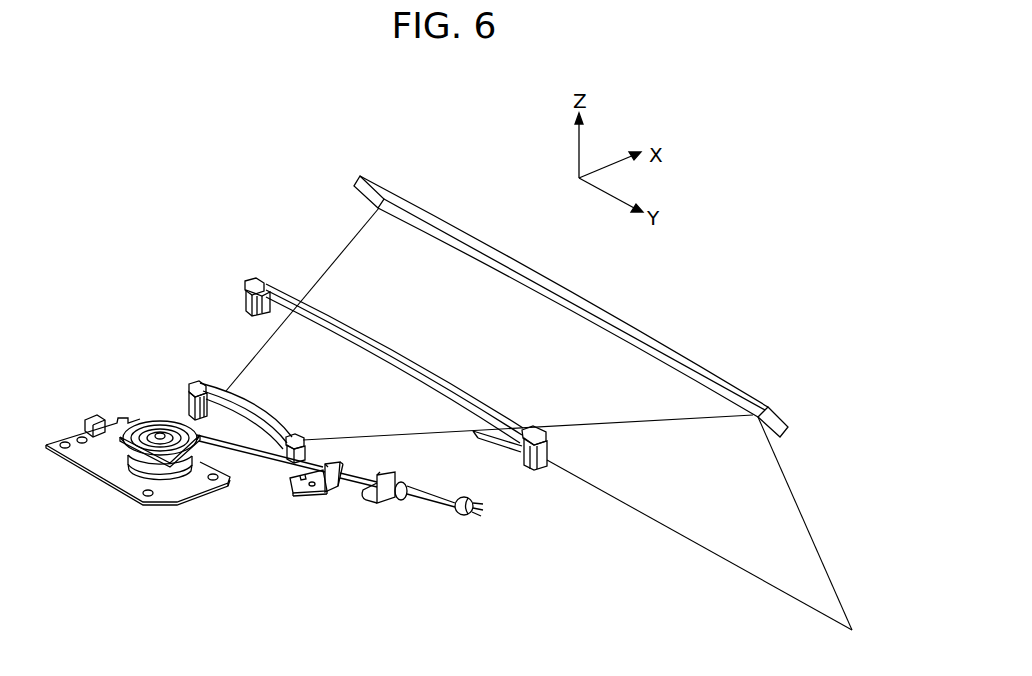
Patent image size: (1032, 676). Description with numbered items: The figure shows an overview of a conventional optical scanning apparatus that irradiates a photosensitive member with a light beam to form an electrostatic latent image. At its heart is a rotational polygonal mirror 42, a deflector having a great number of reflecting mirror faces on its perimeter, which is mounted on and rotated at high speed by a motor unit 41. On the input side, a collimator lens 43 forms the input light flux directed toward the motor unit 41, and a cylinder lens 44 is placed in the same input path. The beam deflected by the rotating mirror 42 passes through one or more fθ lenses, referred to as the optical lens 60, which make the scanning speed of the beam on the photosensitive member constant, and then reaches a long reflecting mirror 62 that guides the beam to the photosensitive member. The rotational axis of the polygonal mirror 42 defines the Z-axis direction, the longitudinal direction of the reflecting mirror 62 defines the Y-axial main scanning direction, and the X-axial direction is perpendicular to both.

The motor unit 41 is at (125, 488).
The rotational polygonal mirror 42 is at (98, 445).
The collimator lens 43 is at (399, 500).
The cylinder lens 44 is at (368, 500).
The optical lens 60 is at (191, 383).
The reflecting mirror 62 is at (380, 186).